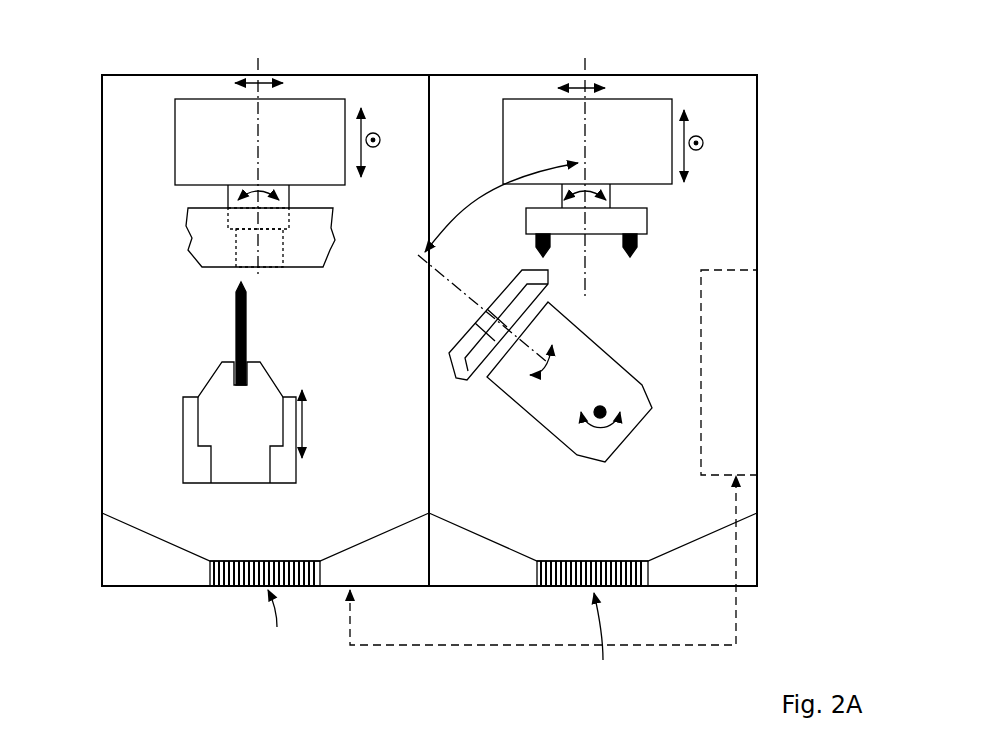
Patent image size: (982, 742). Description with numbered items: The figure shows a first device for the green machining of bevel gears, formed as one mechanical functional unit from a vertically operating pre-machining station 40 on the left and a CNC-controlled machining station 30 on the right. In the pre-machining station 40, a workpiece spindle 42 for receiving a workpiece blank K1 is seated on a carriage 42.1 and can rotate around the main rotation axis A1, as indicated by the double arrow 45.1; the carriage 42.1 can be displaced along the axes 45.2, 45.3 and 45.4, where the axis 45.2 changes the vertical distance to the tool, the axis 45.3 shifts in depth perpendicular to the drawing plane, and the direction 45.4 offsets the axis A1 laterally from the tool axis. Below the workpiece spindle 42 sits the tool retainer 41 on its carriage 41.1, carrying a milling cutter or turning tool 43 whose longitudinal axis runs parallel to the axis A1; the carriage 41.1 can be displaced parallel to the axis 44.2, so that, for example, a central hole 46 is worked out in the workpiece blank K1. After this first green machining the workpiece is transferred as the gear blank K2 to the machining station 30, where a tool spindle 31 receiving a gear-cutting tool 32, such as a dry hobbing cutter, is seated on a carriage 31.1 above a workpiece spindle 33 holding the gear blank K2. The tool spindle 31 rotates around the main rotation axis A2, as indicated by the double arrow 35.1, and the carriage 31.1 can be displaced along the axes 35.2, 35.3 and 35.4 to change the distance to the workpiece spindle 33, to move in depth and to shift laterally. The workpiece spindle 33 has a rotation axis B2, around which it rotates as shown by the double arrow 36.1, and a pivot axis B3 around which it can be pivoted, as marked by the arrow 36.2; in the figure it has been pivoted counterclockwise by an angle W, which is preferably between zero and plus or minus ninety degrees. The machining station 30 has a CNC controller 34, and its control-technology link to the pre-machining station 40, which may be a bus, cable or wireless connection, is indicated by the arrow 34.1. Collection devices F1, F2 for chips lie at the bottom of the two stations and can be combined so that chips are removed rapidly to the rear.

The machining station 30 is at (748, 128).
The tool spindle 31 is at (610, 198).
The carriage 31.1 is at (587, 141).
The gear-cutting tool 32 is at (645, 225).
The workpiece spindle 33 is at (615, 362).
The CNC controller 34 is at (729, 372).
The arrow 34.1 is at (446, 648).
The double arrow 35.1 is at (562, 198).
The axis 35.2 is at (684, 110).
The axis 35.3 is at (700, 150).
The axis 35.4 is at (605, 88).
The double arrow 36.1 is at (508, 386).
The rotary movement 36.2 is at (598, 430).
The pre-machining station 40 is at (108, 120).
The tool retainer 41 is at (207, 385).
The carriage 41.1 is at (192, 457).
The workpiece spindle 42 is at (236, 205).
The carriage 42.1 is at (260, 142).
The tool 43 is at (233, 332).
The axis 44.2 is at (302, 390).
The double arrow 45.1 is at (282, 197).
The axis 45.2 is at (361, 108).
The axis 45.3 is at (378, 146).
The direction 45.4 is at (283, 83).
The central hole 46 is at (285, 258).
The workpiece blank K1 is at (190, 246).
The gear blank K2 is at (450, 354).
The main rotation axis A1 is at (262, 154).
The main rotation axis A2 is at (585, 165).
The rotation axis B2 is at (563, 378).
The pivot axis B3 is at (617, 394).
The angle W is at (501, 206).
The collection device F1 is at (606, 644).
The collection device F2 is at (279, 626).